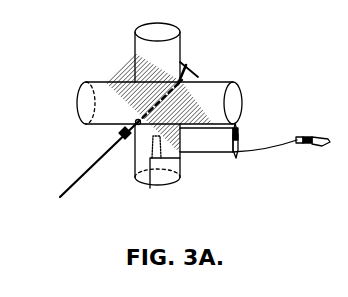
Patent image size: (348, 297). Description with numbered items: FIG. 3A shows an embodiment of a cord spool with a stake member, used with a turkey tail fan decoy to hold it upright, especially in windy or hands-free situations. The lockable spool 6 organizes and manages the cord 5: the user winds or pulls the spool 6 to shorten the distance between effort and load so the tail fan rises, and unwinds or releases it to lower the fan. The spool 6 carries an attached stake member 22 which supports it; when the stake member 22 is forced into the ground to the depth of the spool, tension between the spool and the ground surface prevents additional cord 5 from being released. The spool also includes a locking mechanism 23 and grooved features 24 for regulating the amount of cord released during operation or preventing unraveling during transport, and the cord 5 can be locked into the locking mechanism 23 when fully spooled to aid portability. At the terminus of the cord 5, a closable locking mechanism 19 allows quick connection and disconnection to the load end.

The cord 5 is at (207, 153).
The lockable spool 6 is at (100, 81).
The closable locking mechanism 19 is at (306, 137).
The stake member 22 is at (63, 199).
The locking mechanism 23 is at (240, 126).
The grooved features 24 is at (150, 189).